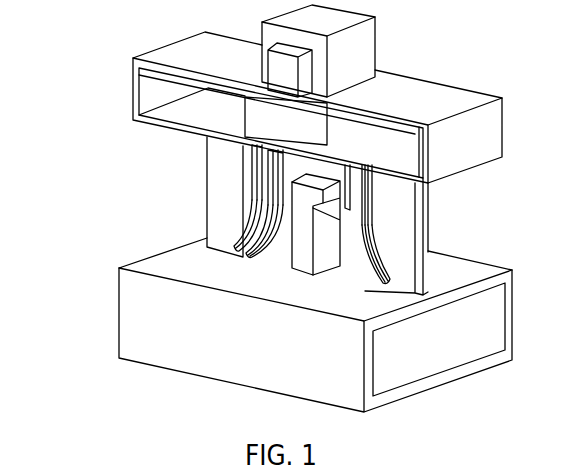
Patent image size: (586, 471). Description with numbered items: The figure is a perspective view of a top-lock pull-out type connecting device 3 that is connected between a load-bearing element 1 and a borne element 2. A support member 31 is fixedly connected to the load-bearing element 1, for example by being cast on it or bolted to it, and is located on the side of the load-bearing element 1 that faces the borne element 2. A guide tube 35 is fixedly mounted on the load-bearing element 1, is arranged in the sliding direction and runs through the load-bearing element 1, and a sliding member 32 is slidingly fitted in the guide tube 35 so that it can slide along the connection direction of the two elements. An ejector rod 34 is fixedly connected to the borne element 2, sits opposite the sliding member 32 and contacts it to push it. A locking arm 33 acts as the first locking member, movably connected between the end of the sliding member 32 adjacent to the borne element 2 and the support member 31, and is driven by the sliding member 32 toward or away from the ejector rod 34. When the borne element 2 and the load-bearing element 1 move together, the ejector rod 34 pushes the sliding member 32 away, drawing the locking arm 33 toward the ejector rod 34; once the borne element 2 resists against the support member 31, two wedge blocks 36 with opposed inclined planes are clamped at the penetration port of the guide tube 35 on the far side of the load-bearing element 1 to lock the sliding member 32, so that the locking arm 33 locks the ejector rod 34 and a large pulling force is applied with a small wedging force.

The load-bearing element 1 is at (469, 92).
The borne element 2 is at (487, 268).
The top-lock pull-out type connecting device 3 is at (75, 38).
The support member 31 is at (225, 159).
The sliding member 32 is at (255, 166).
The locking arm 33 is at (290, 205).
The ejector rod 34 is at (330, 229).
The guide tube 35 is at (275, 119).
The wedge block 36 is at (310, 48).